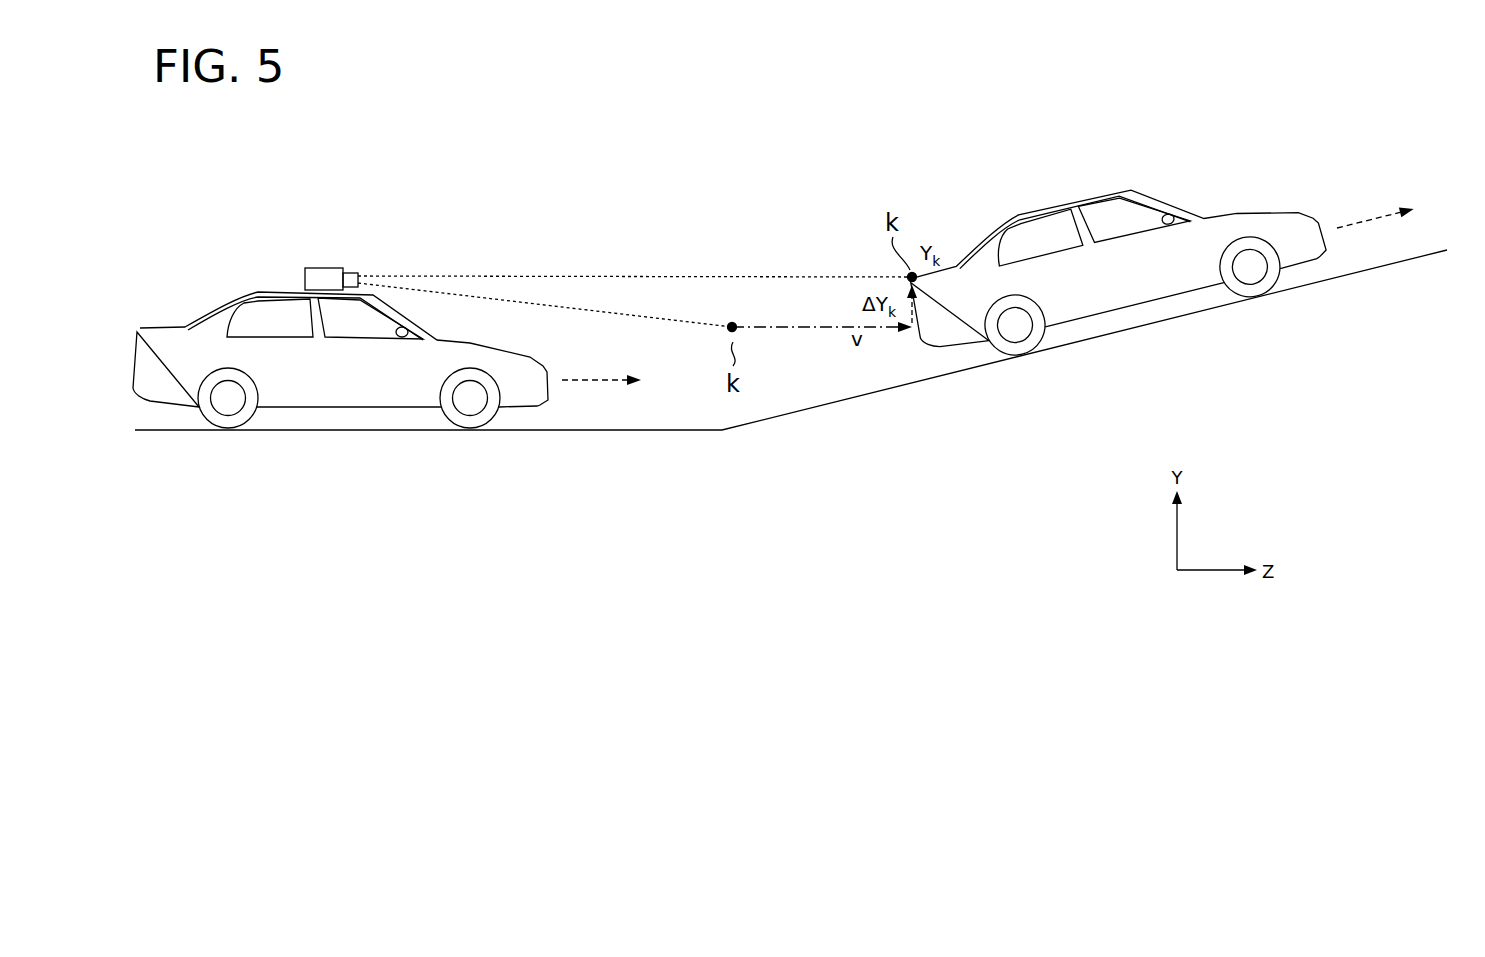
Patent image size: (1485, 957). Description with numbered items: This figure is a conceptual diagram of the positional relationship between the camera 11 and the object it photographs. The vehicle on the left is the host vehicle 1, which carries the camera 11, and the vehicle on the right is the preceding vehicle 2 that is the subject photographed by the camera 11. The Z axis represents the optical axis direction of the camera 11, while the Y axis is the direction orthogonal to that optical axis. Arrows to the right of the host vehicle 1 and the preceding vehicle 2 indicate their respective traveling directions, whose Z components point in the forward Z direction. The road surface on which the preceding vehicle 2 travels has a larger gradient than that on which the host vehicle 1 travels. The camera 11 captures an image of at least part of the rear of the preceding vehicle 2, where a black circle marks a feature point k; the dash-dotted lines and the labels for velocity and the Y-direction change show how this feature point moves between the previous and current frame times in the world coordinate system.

The host vehicle 1 is at (340, 393).
The camera 11 is at (326, 268).
The preceding vehicle 2 is at (1123, 294).